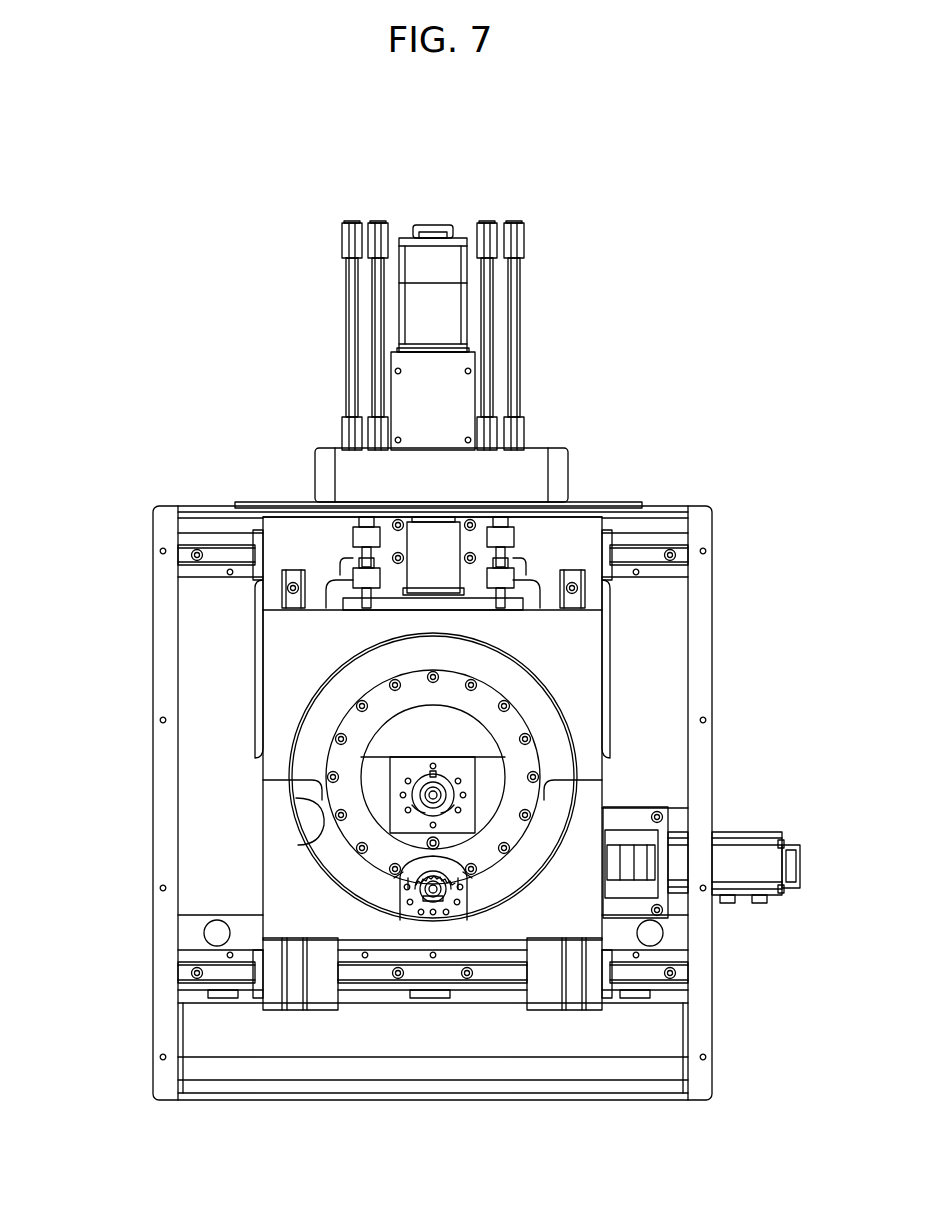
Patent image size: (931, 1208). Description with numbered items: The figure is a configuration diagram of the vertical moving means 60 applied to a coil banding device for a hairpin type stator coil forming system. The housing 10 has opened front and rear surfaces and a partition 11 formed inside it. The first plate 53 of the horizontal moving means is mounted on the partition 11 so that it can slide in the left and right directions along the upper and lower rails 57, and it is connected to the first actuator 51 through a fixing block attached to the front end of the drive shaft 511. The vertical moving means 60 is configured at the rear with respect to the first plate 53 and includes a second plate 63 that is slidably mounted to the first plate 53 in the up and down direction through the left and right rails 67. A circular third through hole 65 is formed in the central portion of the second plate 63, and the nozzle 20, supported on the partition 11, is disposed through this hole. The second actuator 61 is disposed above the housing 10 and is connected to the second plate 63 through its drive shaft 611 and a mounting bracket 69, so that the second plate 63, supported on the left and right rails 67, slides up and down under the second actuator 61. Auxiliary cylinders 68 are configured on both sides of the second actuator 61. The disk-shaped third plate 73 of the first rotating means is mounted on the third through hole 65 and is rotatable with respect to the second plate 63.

The housing 10 is at (162, 578).
The partition 11 is at (652, 650).
The nozzle 20 is at (413, 788).
The first actuator 51 is at (750, 848).
The drive shaft 511 is at (630, 873).
The first plate 53 is at (287, 527).
The upper and lower rails 57 is at (647, 550).
The vertical moving means 60 is at (438, 374).
The second actuator 61 is at (431, 262).
The drive shaft 611 is at (433, 540).
The second plate 63 is at (275, 705).
The third through hole 65 is at (322, 805).
The left and right rails 67 is at (293, 1008).
The auxiliary cylinders 68 is at (365, 247).
The mounting bracket 69 is at (367, 605).
The third plate 73 is at (368, 885).